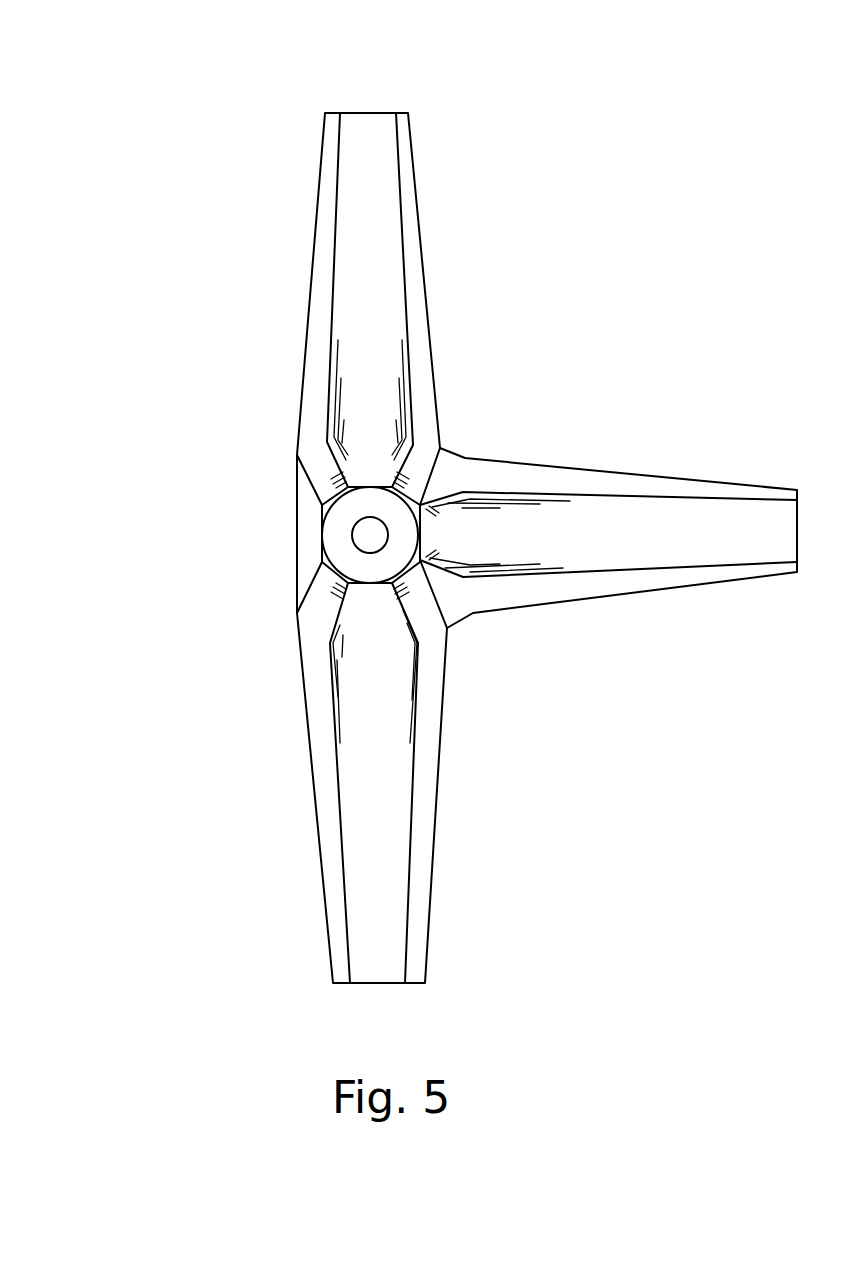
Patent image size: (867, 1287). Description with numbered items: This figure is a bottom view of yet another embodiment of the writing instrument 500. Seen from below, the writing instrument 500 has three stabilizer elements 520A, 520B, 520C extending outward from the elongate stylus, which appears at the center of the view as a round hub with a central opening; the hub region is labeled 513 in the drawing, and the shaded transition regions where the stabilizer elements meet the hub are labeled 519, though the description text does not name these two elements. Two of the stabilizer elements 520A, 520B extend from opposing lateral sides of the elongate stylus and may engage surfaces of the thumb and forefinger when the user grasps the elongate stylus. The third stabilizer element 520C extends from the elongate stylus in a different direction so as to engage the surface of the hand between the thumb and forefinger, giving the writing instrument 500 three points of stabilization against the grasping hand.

The writing instrument 500 is at (138, 79).
The hub 513 is at (354, 540).
The fillet / transition region 519 is at (465, 532).
The stabilizer element 520A is at (372, 235).
The stabilizer element 520B is at (390, 863).
The third stabilizer element 520C is at (707, 525).